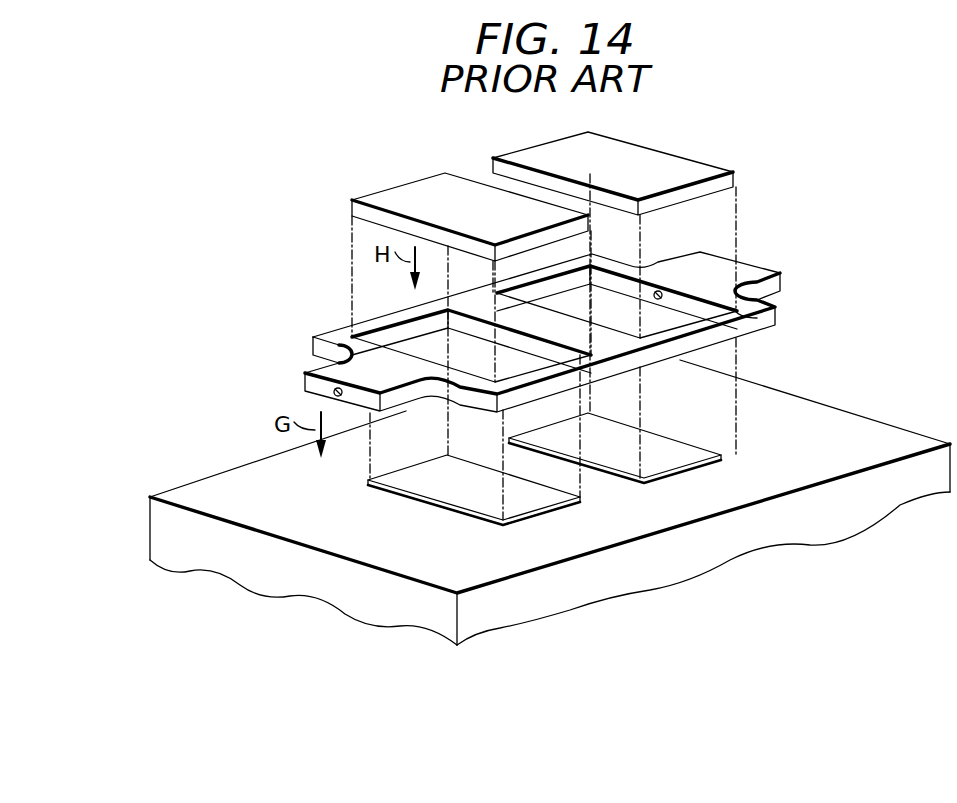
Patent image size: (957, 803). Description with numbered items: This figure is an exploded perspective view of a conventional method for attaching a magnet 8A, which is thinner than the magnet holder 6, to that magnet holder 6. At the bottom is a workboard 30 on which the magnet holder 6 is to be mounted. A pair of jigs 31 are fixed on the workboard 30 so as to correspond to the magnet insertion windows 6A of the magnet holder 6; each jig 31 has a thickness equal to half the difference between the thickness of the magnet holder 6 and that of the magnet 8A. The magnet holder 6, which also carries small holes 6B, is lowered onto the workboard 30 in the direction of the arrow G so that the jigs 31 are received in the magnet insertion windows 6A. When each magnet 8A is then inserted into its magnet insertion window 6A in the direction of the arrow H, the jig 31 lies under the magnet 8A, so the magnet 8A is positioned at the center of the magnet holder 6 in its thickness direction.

The magnet holder 6 is at (735, 272).
The magnet insertion windows 6A is at (397, 332).
The screw holes of frame 6B is at (305, 383).
The magnet 8A is at (392, 198).
The workboard 30 is at (815, 410).
The jigs 31 is at (472, 498).